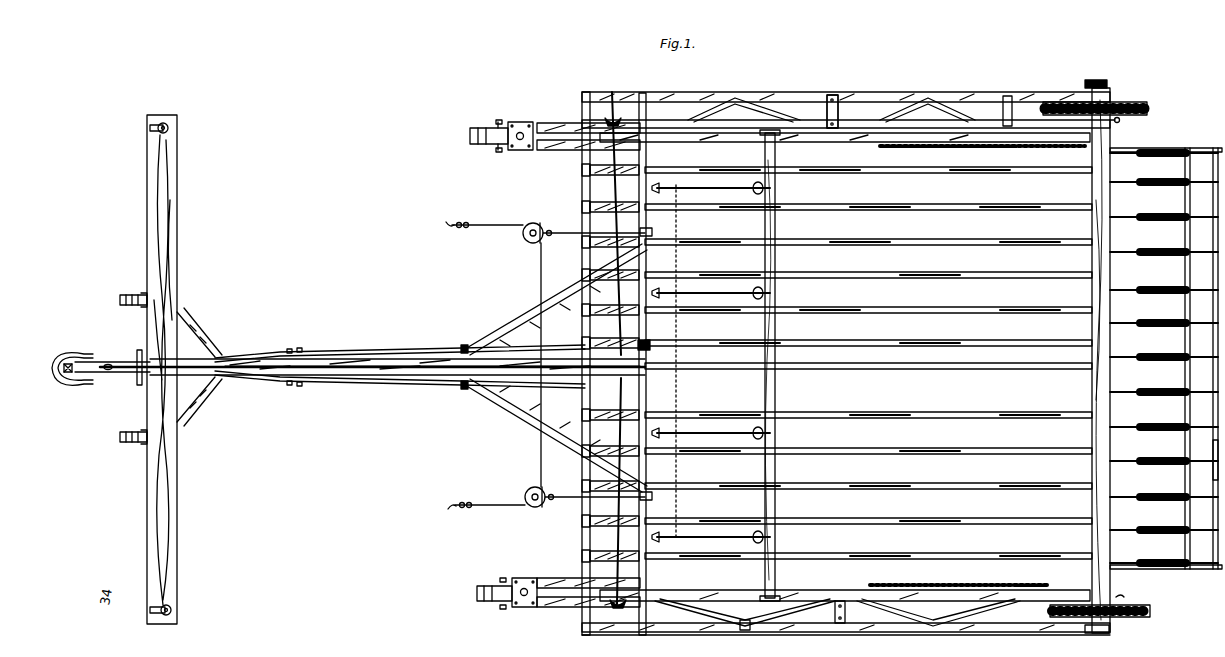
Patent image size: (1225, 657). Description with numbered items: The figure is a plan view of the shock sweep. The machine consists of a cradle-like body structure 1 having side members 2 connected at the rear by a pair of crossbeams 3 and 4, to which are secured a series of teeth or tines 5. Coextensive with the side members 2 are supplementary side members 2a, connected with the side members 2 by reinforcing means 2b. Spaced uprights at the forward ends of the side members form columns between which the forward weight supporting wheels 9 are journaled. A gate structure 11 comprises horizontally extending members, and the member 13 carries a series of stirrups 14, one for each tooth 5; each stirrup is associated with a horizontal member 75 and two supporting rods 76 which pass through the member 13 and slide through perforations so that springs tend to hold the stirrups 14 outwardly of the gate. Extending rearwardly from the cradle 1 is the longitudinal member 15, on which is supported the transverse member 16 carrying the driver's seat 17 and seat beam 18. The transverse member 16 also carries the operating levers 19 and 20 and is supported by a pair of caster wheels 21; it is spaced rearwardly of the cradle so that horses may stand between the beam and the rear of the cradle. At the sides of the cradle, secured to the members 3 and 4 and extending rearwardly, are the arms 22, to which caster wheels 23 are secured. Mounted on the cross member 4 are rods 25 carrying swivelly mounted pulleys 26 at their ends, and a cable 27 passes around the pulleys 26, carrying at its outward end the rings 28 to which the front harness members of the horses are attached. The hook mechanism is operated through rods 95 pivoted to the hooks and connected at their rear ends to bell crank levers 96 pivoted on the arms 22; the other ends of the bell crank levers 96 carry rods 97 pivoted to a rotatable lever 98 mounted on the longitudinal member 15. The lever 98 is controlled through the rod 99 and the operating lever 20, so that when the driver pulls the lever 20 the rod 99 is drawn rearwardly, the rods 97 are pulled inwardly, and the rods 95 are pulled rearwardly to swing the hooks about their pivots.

The cradle-like body structure 1 is at (779, 631).
The side members 2 is at (703, 142).
The supplementary side members 2a is at (878, 96).
The reinforcing means 2b is at (748, 107).
The crossbeam 3 is at (581, 190).
The crossbeam 4 is at (648, 158).
The teeth or tines 5 is at (846, 172).
The forward weight supporting wheels 9 is at (1132, 102).
The gate structure 11 is at (1120, 148).
The horizontally extending member 13 is at (1185, 165).
The stirrups 14 is at (1207, 178).
The longitudinal member 15 is at (245, 357).
The transverse member 16 is at (177, 218).
The driver's seat 17 is at (73, 352).
The seat beam 18 is at (100, 361).
The operating lever 19 is at (126, 375).
The operating lever 20 is at (188, 398).
The caster wheels 21 is at (120, 299).
The arms 22 is at (553, 115).
The caster wheels 23 is at (478, 135).
The rods 25 is at (559, 231).
The pulleys 26 is at (524, 240).
The cable 27 is at (540, 437).
The rings 28 is at (450, 223).
The horizontal member 75 is at (1218, 478).
The supporting rods 76 is at (1203, 569).
The rods 95 is at (812, 116).
The bell crank levers 96 is at (620, 112).
The rods 97 is at (612, 190).
The rotatable lever 98 is at (645, 348).
The rod 99 is at (252, 372).